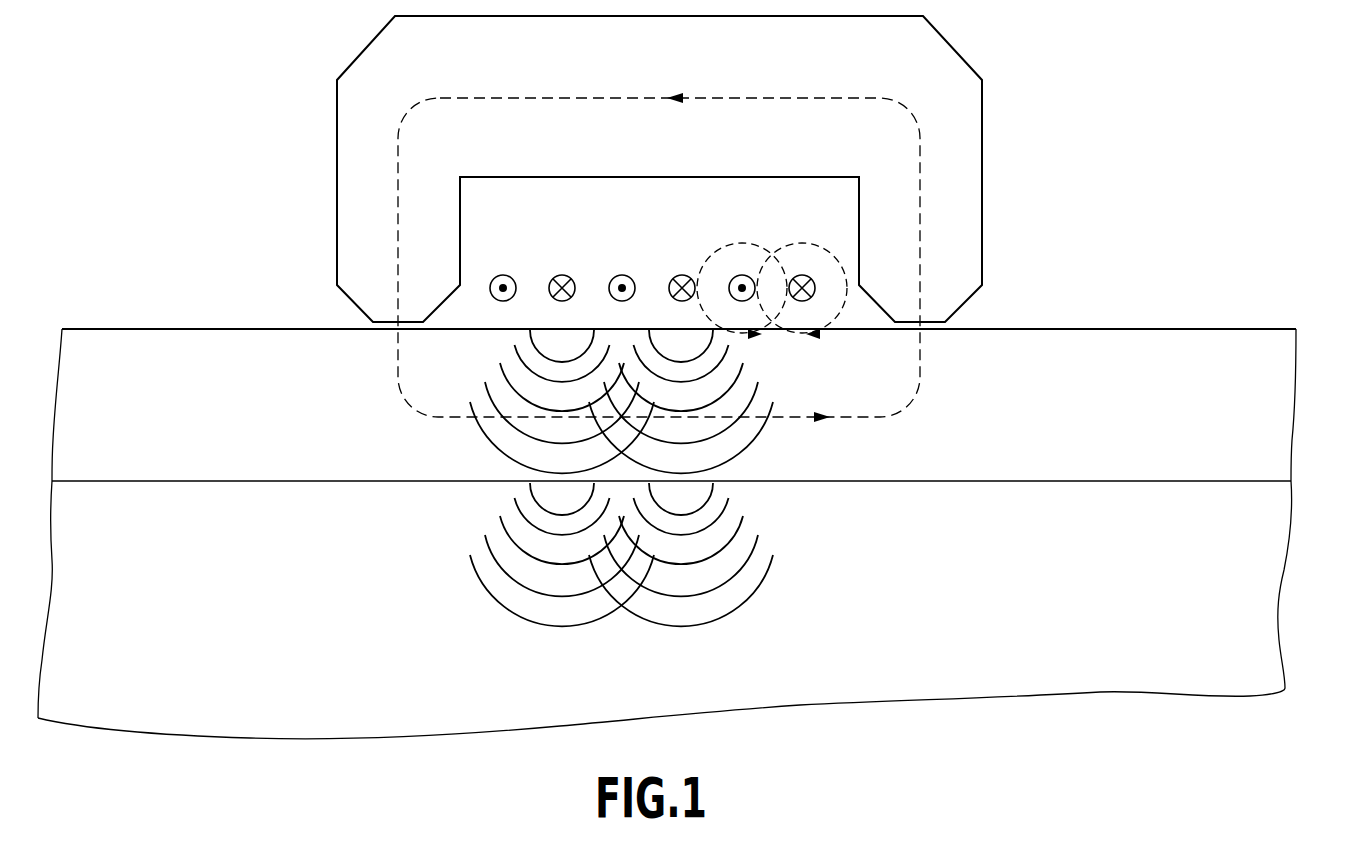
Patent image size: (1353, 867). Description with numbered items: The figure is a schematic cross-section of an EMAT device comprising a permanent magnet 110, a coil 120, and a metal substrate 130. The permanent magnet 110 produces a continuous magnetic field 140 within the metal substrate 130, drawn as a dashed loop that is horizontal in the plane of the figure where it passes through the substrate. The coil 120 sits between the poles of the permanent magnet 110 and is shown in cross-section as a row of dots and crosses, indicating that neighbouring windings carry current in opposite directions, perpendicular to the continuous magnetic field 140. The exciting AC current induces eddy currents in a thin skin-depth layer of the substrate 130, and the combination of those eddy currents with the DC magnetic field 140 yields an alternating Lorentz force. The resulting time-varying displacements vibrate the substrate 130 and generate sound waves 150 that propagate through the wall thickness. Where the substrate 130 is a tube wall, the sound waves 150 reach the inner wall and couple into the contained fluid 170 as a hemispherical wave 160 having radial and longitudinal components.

The permanent magnet 110 is at (353, 148).
The coil 120 is at (488, 279).
The metal substrate 130 is at (285, 372).
The continuous magnetic field 140 is at (922, 182).
The sound waves 150 is at (474, 426).
The hemispherical wave 160 is at (780, 578).
The fluid 170 is at (1252, 602).